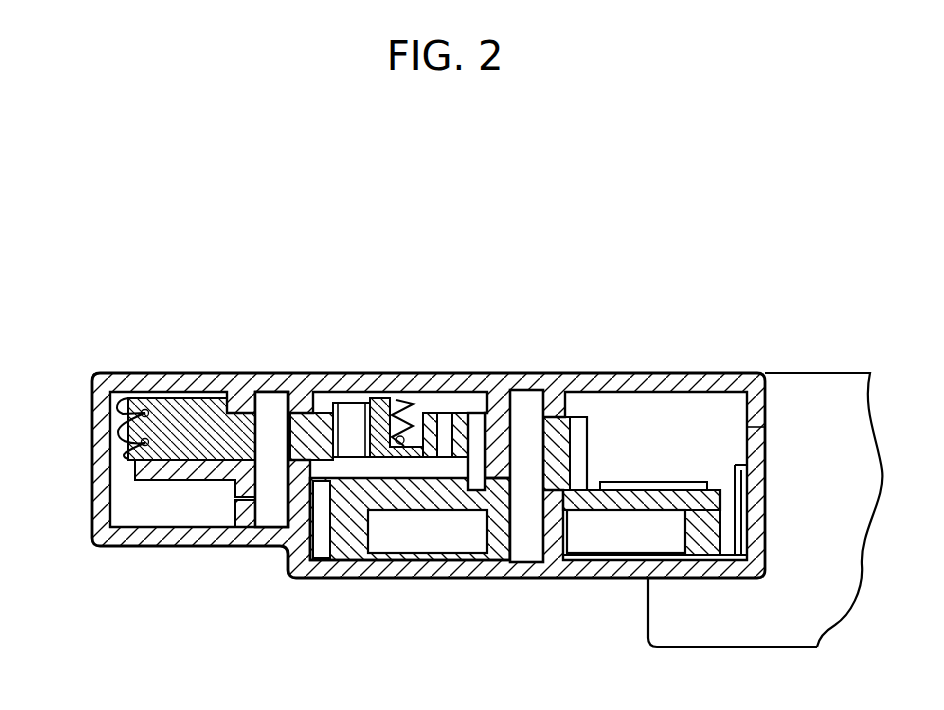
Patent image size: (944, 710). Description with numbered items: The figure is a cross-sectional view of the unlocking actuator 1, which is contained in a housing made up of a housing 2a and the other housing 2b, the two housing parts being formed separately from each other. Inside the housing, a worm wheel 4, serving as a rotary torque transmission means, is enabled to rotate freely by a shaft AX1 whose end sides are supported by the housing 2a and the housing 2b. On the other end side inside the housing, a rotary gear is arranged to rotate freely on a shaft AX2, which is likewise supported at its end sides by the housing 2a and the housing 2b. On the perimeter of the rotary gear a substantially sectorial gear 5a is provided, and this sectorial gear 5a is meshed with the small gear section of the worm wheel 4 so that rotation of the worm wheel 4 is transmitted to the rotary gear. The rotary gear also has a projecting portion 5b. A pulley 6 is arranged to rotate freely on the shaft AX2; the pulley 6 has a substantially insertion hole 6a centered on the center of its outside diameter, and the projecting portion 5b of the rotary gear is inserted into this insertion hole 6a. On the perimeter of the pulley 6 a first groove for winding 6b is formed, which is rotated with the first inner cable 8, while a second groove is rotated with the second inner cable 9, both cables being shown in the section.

The unlocking actuator 1 is at (570, 290).
The housing 2a is at (157, 537).
The other housing 2b is at (704, 378).
The worm wheel 4 is at (558, 457).
The sectorial gear 5a is at (460, 435).
The projecting portion 5b is at (350, 423).
The pulley 6 is at (178, 418).
The insertion hole 6a is at (368, 403).
The first groove for winding 6b is at (413, 410).
The first inner cable 8 is at (117, 428).
The second inner cable 9 is at (143, 442).
The shaft AX1 is at (527, 547).
The shaft AX2 is at (272, 505).